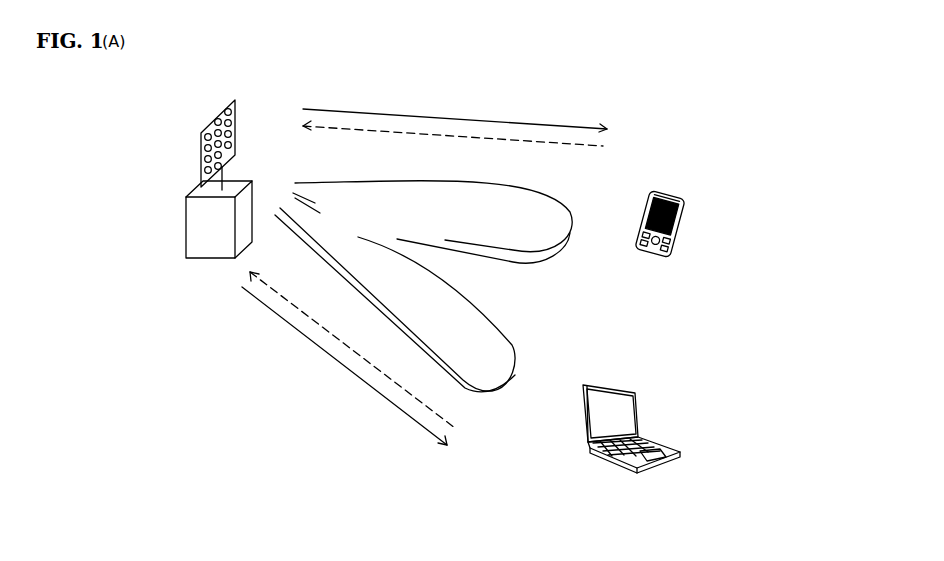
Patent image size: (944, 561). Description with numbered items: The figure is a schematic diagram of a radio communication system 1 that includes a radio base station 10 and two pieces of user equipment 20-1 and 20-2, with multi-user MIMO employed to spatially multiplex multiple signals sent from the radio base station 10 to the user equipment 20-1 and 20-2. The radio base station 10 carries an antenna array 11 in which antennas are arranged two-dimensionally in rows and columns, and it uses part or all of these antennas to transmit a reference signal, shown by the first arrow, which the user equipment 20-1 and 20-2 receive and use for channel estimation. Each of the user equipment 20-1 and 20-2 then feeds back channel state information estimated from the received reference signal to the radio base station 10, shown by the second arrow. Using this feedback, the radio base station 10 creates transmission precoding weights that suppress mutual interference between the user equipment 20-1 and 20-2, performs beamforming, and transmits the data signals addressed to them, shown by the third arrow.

The radio communication system 1 is at (653, 38).
The radio base station 10 is at (186, 232).
The antenna array 11 is at (201, 162).
The user equipment 20-1 is at (681, 224).
The user equipment 20-2 is at (638, 407).